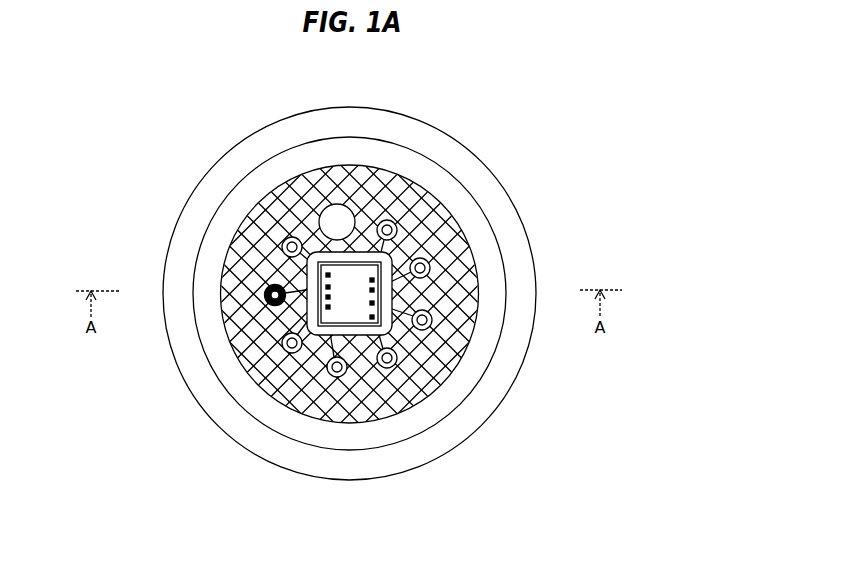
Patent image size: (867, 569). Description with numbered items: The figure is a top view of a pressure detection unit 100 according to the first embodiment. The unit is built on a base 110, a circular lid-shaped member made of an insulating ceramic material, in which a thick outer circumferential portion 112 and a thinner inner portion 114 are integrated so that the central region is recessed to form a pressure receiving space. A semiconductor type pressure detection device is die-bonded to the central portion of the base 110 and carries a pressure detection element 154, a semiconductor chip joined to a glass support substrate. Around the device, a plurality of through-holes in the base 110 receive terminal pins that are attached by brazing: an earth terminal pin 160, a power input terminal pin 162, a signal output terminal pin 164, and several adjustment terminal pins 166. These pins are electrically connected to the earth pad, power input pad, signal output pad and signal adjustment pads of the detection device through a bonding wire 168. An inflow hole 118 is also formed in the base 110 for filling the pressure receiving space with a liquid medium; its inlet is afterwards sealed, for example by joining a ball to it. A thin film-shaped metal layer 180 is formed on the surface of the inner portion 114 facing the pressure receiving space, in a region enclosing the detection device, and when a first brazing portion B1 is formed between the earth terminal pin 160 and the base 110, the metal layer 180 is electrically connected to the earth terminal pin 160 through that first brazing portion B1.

The pressure detection unit 100 is at (581, 153).
The base 110 is at (401, 127).
The outer circumferential portion 112 is at (505, 367).
The inner portion 114 is at (277, 165).
The inflow hole 118 is at (339, 212).
The pressure detection element 154 is at (355, 280).
The earth terminal pin 160 is at (228, 245).
The power input terminal pin 162 is at (291, 244).
The signal output terminal pin 164 is at (250, 380).
The adjustment terminal pins 166 is at (389, 222).
The bonding wire 168 is at (270, 312).
The metal layer 180 is at (463, 334).
The first brazing portion B1 is at (264, 297).